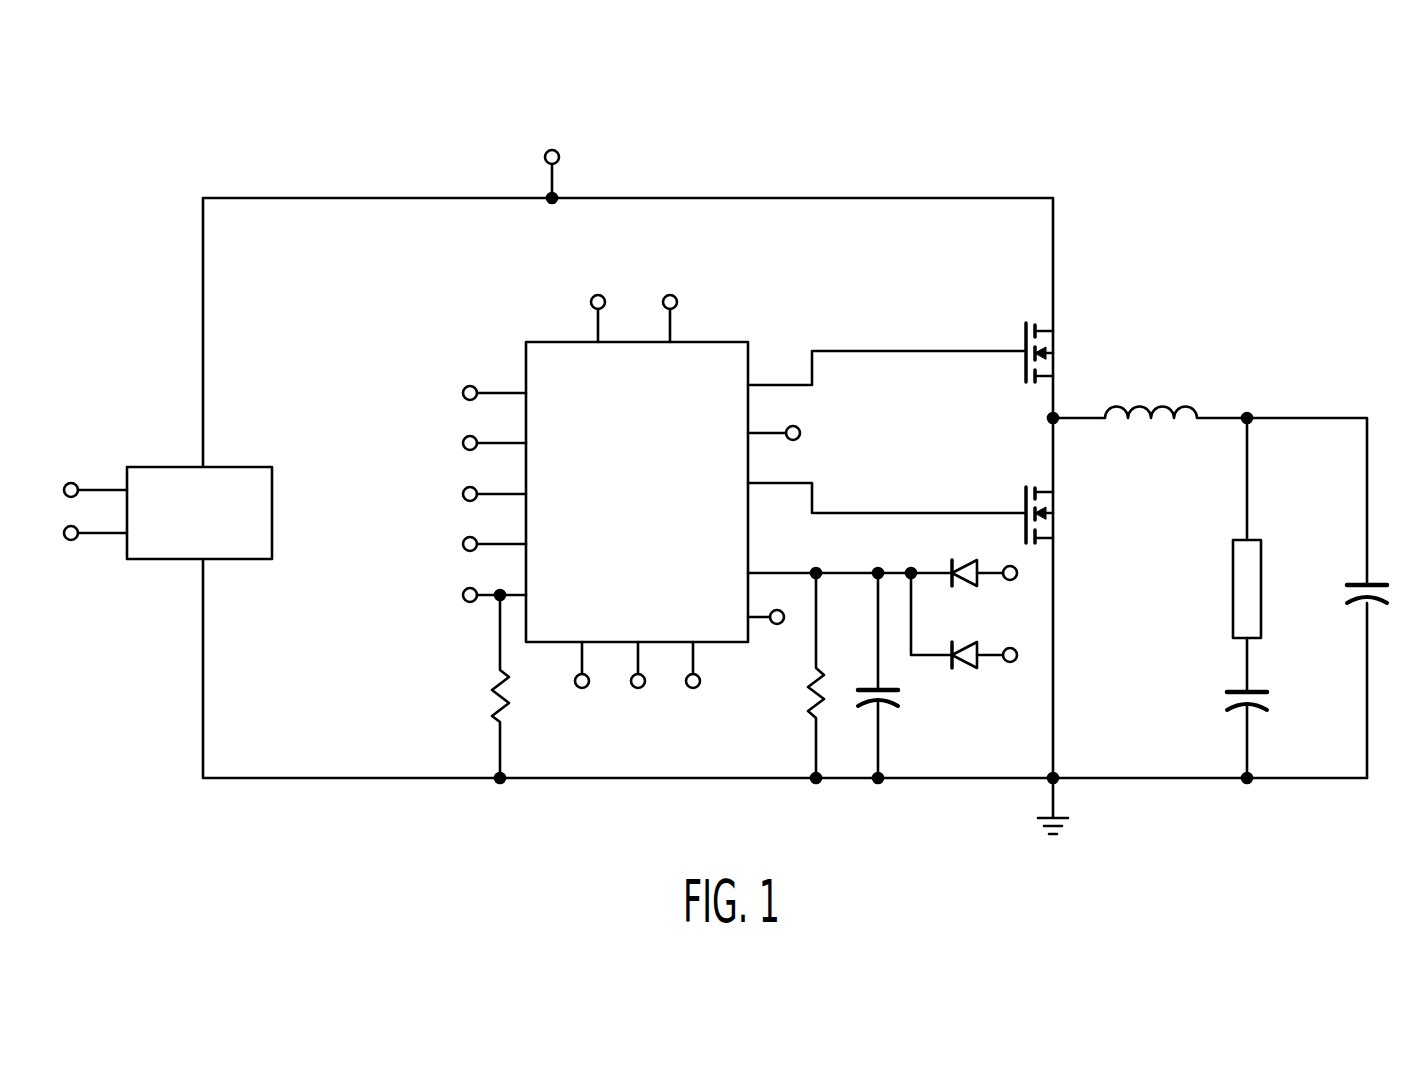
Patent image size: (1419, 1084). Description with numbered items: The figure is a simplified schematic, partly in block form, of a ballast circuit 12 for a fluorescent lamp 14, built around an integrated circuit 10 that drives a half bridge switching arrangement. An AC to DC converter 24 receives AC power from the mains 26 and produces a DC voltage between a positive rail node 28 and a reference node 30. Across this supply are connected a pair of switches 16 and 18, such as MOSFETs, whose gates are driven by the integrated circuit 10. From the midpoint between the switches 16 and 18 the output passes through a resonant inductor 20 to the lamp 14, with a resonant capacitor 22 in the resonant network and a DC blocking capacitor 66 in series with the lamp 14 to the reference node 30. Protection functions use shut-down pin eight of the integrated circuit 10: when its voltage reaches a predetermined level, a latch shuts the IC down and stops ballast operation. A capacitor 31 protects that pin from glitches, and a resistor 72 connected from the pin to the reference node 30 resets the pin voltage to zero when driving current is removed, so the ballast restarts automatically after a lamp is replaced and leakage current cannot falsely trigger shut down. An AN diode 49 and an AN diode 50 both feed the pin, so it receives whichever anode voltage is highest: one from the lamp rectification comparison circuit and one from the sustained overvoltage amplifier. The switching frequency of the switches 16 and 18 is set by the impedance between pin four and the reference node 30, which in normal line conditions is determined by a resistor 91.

The ballast circuit 12 is at (233, 165).
The positive rail node 28 is at (556, 170).
The AC to DC converter 24 is at (168, 466).
The mains 26 is at (96, 494).
The integrated circuit 10 is at (652, 515).
The switch 16 is at (1066, 357).
The switch 18 is at (1063, 507).
The resonant inductor 20 is at (1162, 398).
The fluorescent lamp 14 is at (1263, 563).
The resonant capacitor 22 is at (1374, 580).
The DC blocking capacitor 66 is at (1268, 703).
The reference node 30 is at (1068, 819).
The AN diode 49 is at (973, 557).
The AN diode 50 is at (970, 670).
The capacitor 31 is at (898, 700).
The resistor 72 is at (808, 710).
The resistor 91 is at (494, 712).